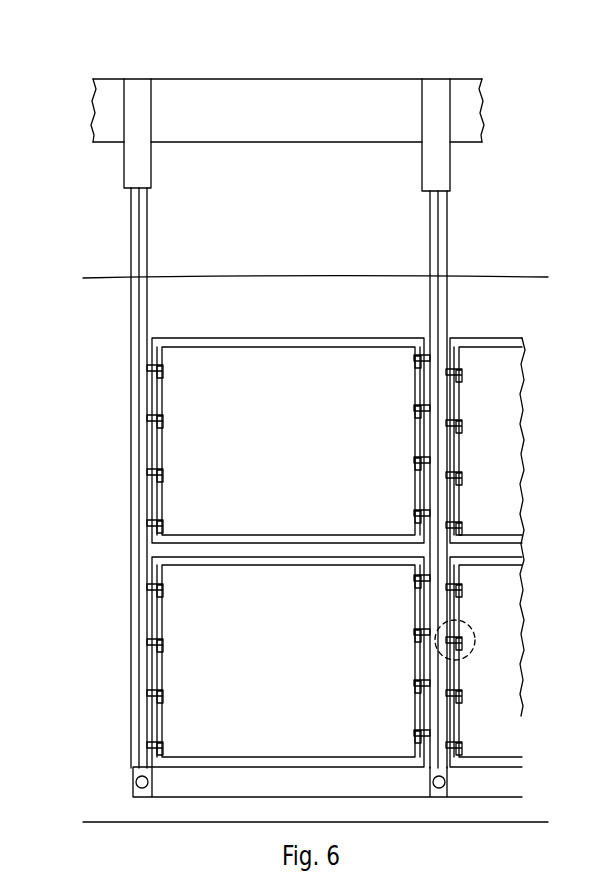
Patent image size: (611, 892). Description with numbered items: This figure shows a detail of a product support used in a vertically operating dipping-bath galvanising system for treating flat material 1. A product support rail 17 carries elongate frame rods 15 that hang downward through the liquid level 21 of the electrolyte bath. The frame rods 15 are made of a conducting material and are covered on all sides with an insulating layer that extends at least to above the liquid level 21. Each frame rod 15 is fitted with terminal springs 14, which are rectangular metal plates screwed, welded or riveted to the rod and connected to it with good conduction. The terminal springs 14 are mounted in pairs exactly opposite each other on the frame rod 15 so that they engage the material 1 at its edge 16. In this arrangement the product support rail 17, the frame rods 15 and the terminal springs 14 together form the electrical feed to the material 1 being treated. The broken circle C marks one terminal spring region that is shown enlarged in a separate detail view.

The flat material to be treated 1 is at (268, 362).
The terminal spring 14 is at (163, 518).
The frame rod 15 is at (140, 731).
The edge of the material to be treated 16 is at (420, 599).
The product support rail 17 is at (279, 115).
The liquid level of the electrolyte bath 21 is at (465, 283).
The broken circle C is at (477, 640).